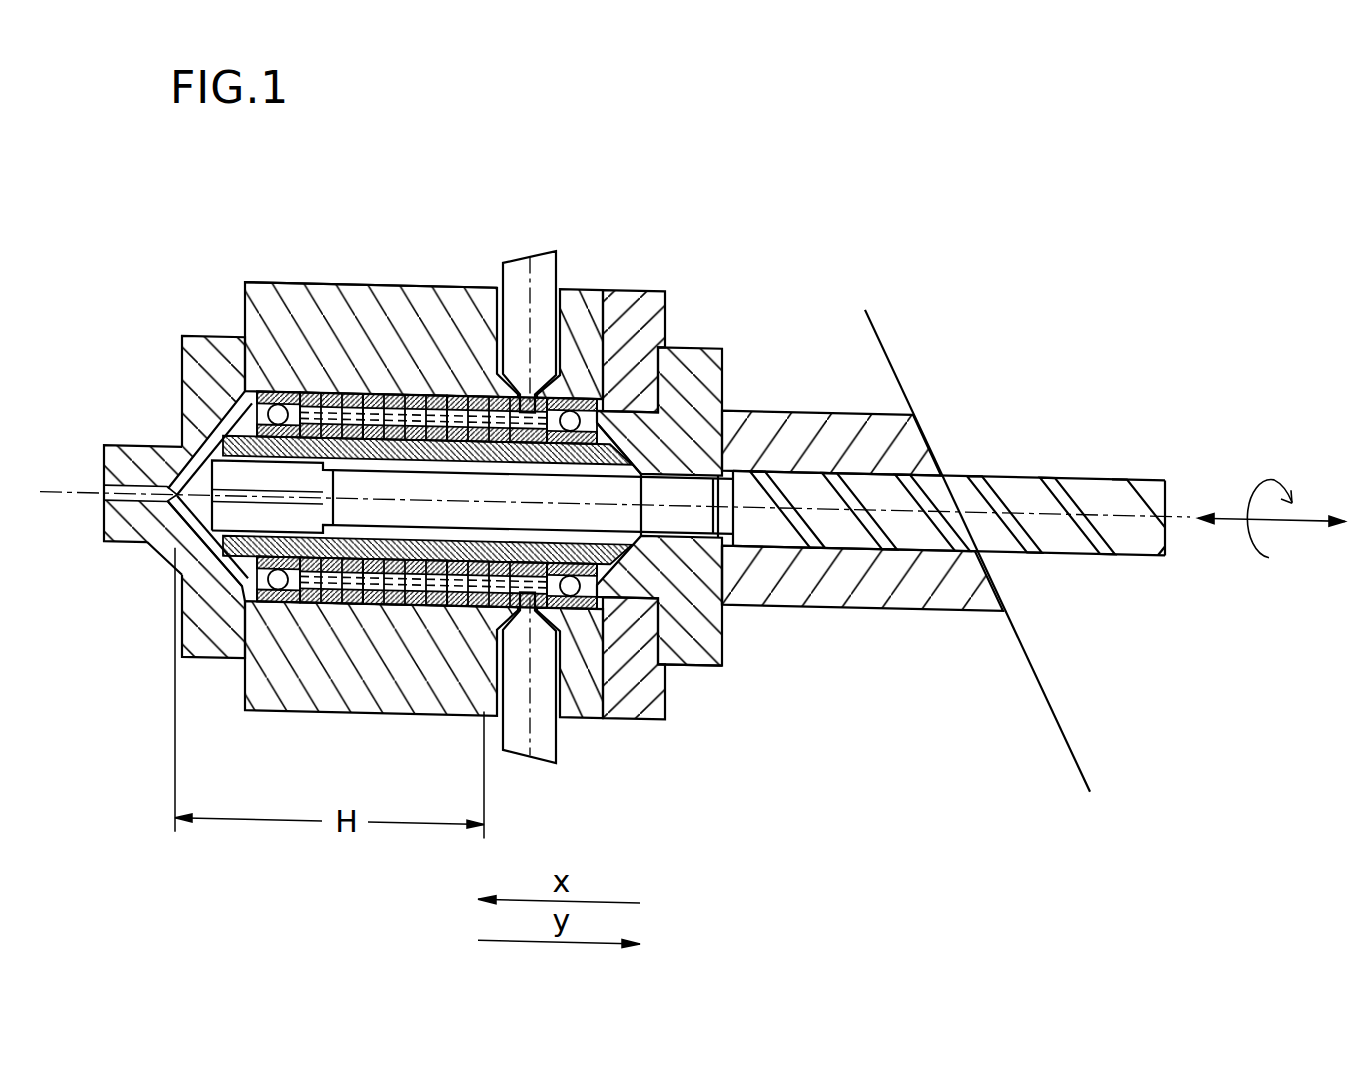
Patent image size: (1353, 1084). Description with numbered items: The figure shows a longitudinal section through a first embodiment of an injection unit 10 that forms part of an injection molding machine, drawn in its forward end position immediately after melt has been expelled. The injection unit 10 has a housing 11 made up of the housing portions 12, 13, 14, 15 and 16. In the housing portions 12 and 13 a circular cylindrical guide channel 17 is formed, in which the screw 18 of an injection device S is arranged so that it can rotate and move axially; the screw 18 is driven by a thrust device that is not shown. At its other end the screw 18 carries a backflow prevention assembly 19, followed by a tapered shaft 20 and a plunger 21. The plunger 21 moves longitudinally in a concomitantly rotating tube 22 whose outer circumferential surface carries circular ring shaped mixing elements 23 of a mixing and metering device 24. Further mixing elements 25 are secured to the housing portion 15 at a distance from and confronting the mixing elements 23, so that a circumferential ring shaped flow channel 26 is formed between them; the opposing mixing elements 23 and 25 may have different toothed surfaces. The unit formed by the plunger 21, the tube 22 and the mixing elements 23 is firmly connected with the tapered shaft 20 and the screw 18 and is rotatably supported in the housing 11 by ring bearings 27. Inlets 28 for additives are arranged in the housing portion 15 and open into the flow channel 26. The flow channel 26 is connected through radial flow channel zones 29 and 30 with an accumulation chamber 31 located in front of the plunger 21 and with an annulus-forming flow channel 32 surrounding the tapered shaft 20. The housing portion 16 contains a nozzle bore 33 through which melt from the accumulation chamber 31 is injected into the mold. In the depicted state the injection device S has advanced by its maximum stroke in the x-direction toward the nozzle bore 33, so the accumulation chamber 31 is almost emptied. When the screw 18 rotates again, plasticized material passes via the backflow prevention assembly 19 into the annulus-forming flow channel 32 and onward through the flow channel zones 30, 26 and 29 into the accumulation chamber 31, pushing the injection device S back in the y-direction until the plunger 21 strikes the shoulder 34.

The injection unit 10 is at (763, 232).
The housing 11 is at (332, 262).
The housing portion 12 is at (802, 430).
The housing portion 13 is at (695, 375).
The housing portion 14 is at (625, 345).
The housing portion 15 is at (385, 318).
The housing portion 16 is at (172, 457).
The circular cylindrical guide channel 17 is at (907, 481).
The screw 18 is at (1083, 470).
The backflow prevention assembly 19 is at (706, 560).
The tapered shaft 20 is at (520, 471).
The plunger 21 is at (238, 513).
The concomitantly rotating tube 22 is at (316, 388).
The mixing elements 23 is at (323, 605).
The mixing and metering device 24 is at (422, 388).
The further mixing elements 25 is at (378, 605).
The flow channel 26 is at (425, 605).
The ring bearings 27 is at (255, 400).
The inlets 28 is at (545, 290).
The radial flow channel zone 29 is at (185, 615).
The radial flow channel zone 30 is at (667, 657).
The accumulation chamber 31 is at (152, 549).
The annulus-forming flow channel 32 is at (720, 640).
The nozzle bore 33 is at (103, 492).
The shoulder 34 is at (642, 420).
The injection device S is at (723, 460).